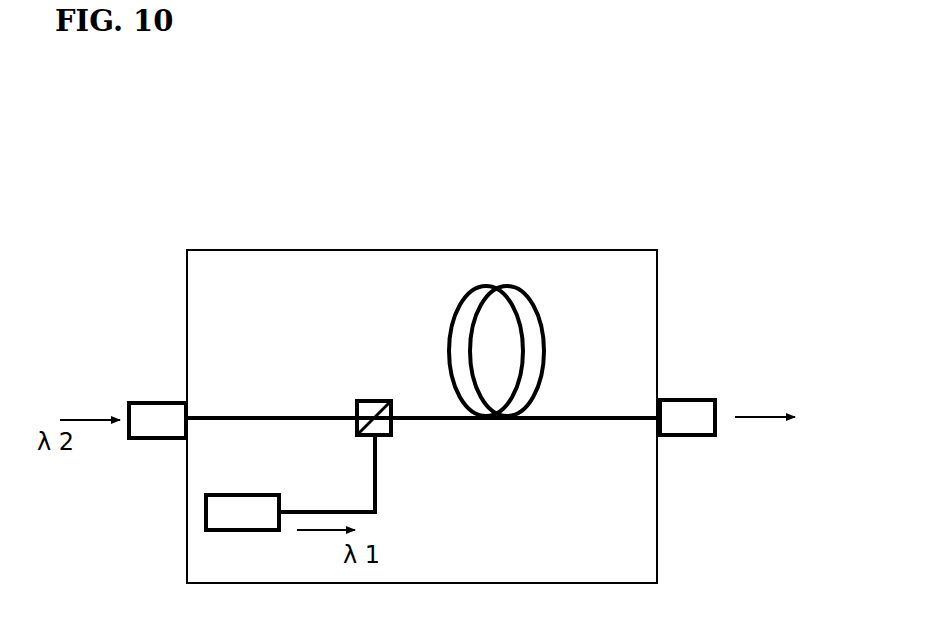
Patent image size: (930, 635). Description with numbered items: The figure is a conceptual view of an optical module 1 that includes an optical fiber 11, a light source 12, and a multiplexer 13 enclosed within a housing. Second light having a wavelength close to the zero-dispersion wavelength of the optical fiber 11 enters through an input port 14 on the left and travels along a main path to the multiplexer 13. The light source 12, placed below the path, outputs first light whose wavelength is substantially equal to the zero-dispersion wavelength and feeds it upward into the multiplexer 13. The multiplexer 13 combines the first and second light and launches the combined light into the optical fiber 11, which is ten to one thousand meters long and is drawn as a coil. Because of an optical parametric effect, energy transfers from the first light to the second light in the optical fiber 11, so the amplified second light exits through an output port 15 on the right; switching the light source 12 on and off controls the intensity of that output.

The optical module 1 is at (678, 167).
The optical fiber 11 is at (535, 297).
The light source 12 is at (242, 493).
The multiplexer 13 is at (375, 398).
The input port 14 is at (155, 400).
The output port 15 is at (693, 397).